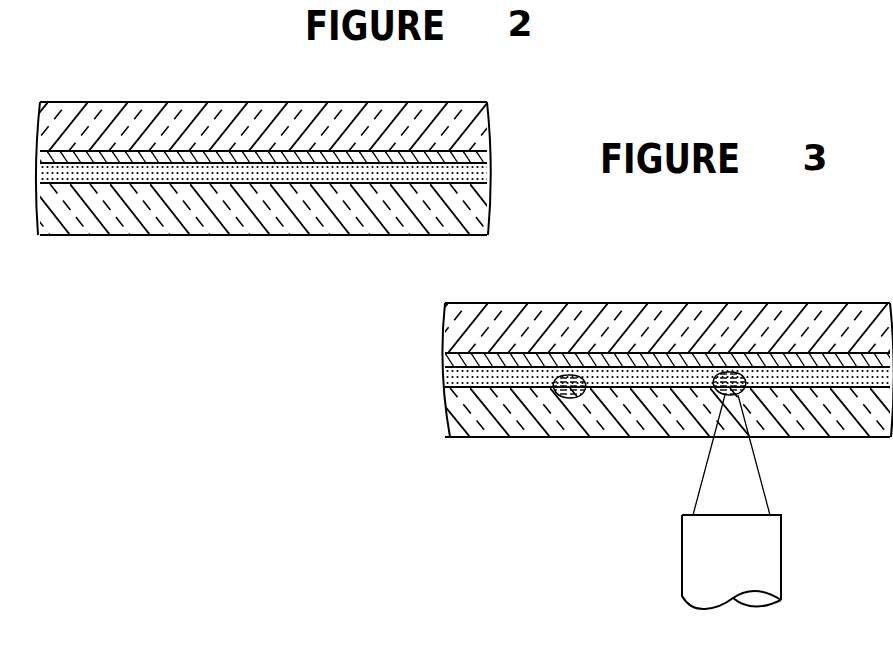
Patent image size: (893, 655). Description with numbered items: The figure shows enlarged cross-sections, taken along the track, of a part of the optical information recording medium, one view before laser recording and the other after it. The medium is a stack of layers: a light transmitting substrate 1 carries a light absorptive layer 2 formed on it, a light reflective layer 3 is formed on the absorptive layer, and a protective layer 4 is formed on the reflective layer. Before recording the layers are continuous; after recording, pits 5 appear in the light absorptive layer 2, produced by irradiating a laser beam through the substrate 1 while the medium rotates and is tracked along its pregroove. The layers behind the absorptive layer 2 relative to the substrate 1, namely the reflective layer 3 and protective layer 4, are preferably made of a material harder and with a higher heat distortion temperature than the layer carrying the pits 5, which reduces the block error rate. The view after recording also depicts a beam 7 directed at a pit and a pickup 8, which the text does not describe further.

In FIG. 2, the light transmitting substrate 1 is at (340, 208).
In FIG. 3, the light transmitting substrate 1 is at (790, 392).
In FIG. 2, the light absorptive layer 2 is at (113, 185).
In FIG. 3, the light absorptive layer 2 is at (527, 380).
In FIG. 2, the light reflective layer 3 is at (242, 153).
In FIG. 3, the light reflective layer 3 is at (672, 357).
In FIG. 2, the protective layer 4 is at (170, 113).
In FIG. 3, the protective layer 4 is at (577, 318).
In FIG. 3, the pits 5 is at (566, 398).
In FIG. 3, the light beam 7 is at (728, 460).
In FIG. 3, the detector 8 is at (773, 563).